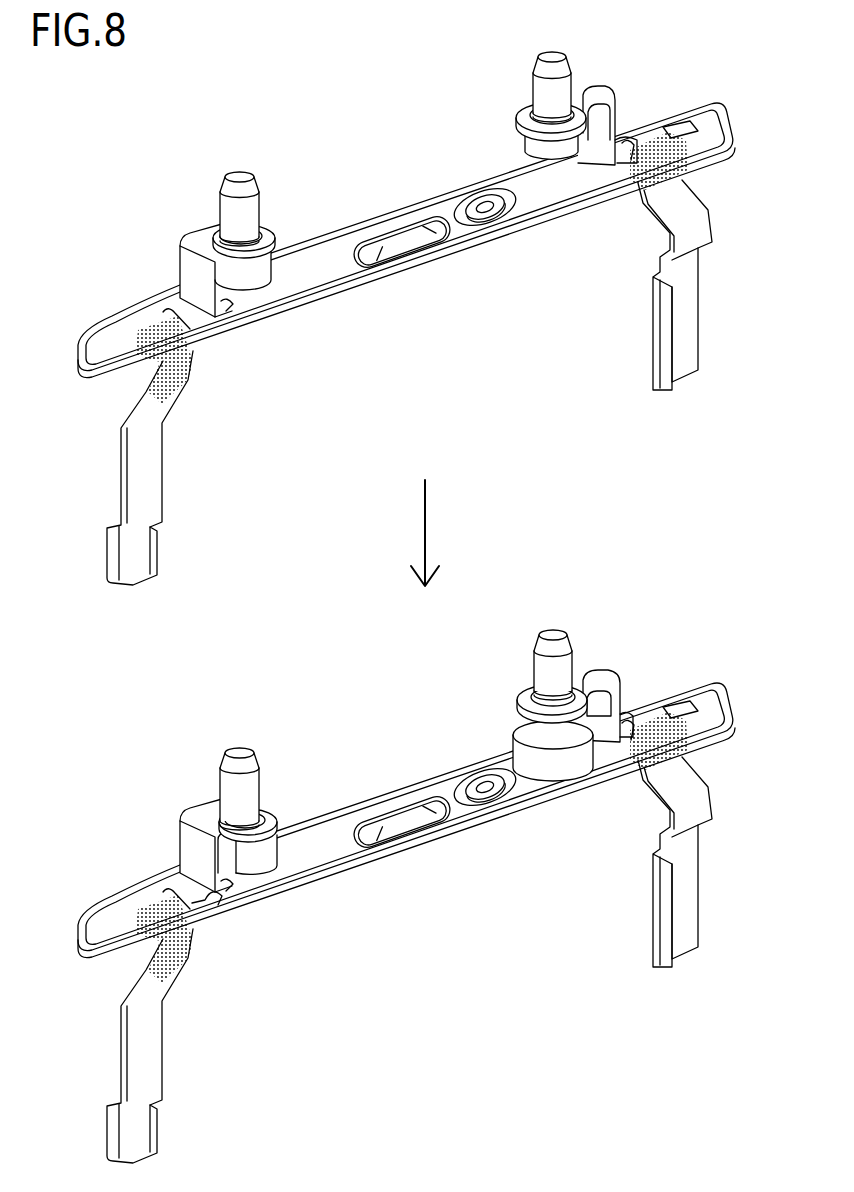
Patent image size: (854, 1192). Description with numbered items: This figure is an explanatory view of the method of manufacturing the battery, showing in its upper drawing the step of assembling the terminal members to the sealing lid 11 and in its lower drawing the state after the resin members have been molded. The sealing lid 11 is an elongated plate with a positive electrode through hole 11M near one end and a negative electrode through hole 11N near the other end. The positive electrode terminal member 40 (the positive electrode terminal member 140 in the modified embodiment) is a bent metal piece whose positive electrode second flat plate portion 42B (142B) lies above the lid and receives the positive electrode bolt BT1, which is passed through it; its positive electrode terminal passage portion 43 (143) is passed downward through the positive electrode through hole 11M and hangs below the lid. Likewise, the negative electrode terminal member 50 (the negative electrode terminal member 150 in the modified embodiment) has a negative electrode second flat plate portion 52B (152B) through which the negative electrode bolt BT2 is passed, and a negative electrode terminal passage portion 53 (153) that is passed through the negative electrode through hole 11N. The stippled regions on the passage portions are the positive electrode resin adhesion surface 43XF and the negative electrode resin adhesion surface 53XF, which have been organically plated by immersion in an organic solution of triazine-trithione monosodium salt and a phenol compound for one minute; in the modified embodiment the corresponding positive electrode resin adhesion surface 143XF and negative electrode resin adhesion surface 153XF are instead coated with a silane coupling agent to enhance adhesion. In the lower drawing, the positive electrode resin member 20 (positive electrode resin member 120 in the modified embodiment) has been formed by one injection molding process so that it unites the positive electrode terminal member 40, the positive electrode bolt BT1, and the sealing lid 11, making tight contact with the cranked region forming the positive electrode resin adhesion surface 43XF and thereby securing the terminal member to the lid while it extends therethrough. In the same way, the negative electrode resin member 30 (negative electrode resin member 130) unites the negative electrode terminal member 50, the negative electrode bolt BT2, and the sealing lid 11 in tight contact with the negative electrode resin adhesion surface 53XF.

The sealing lid 11 is at (343, 292).
The positive electrode through hole 11M is at (683, 127).
The negative electrode through hole 11N is at (223, 333).
The positive electrode bolt BT1 is at (537, 82).
The negative electrode bolt BT2 is at (226, 181).
The positive electrode terminal member 40 is at (593, 394).
The positive electrode terminal member 140 is at (596, 85).
The positive electrode second flat plate portion 42B is at (483, 411).
The flange portion of second terminal 142B is at (523, 105).
The positive electrode terminal passage portion 43 is at (639, 573).
The leg portion of second terminal 143 is at (662, 210).
The positive electrode resin adhesion surface 43XF is at (693, 419).
The positive electrode resin adhesion surface 143XF is at (650, 140).
The negative electrode terminal member 50 is at (196, 543).
The negative electrode terminal member 150 is at (183, 233).
The negative electrode second flat plate portion 52B is at (290, 507).
The flange portion of first terminal 152B is at (268, 230).
The negative electrode terminal passage portion 53 is at (191, 757).
The leg portion of first terminal 153 is at (158, 408).
The negative electrode resin adhesion surface 53XF is at (188, 649).
The negative electrode resin adhesion surface 153XF is at (185, 384).
The positive electrode resin member 20 is at (571, 781).
The positive electrode resin member 120 is at (600, 755).
The negative electrode resin member 30 is at (244, 942).
The negative electrode resin member 130 is at (217, 902).